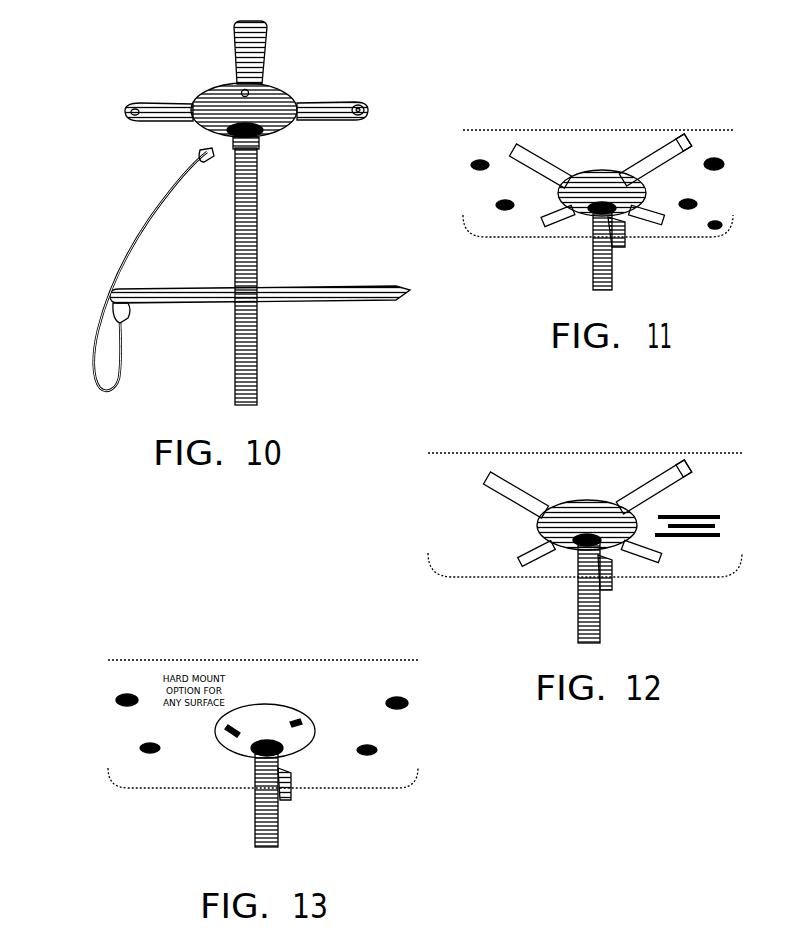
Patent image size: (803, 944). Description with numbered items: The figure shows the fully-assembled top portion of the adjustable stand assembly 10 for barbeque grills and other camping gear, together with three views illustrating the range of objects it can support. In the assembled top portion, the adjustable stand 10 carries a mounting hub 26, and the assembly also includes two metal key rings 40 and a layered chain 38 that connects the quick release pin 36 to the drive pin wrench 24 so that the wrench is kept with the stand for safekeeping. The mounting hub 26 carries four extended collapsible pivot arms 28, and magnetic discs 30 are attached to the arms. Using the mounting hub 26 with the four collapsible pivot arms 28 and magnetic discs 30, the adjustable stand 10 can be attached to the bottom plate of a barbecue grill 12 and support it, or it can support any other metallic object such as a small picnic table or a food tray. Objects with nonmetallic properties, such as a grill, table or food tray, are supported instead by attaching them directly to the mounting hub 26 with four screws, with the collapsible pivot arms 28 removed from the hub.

In FIG. 10, the adjustable stand assembly 10 is at (318, 231).
In FIG. 11, the adjustable stand assembly 10 is at (663, 274).
In FIG. 12, the adjustable stand assembly 10 is at (663, 618).
In FIG. 13, the adjustable stand assembly 10 is at (333, 836).
In FIG. 11, the barbecue grill 12 is at (513, 130).
In FIG. 10, the drive pin wrench 24 is at (307, 303).
In FIG. 10, the mounting hub 26 is at (208, 92).
In FIG. 11, the mounting hub 26 is at (597, 170).
In FIG. 12, the mounting hub 26 is at (580, 500).
In FIG. 13, the mounting hub 26 is at (278, 708).
In FIG. 10, the collapsible pivot arms 28 is at (307, 103).
In FIG. 11, the collapsible pivot arms 28 is at (684, 137).
In FIG. 12, the collapsible pivot arms 28 is at (681, 465).
In FIG. 10, the magnetic discs 30 is at (360, 102).
In FIG. 11, the magnetic discs 30 is at (667, 135).
In FIG. 12, the magnetic discs 30 is at (660, 463).
In FIG. 10, the quick release pin 36 is at (259, 147).
In FIG. 10, the layered chain 38 is at (148, 222).
In FIG. 10, the metal key rings 40 is at (200, 152).